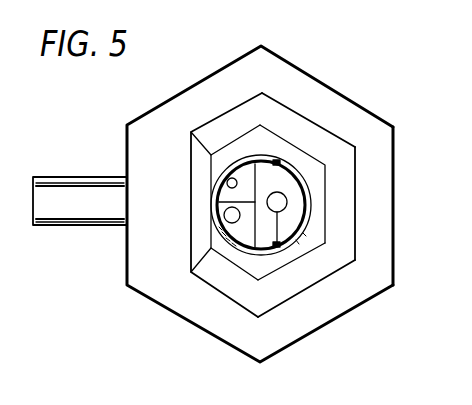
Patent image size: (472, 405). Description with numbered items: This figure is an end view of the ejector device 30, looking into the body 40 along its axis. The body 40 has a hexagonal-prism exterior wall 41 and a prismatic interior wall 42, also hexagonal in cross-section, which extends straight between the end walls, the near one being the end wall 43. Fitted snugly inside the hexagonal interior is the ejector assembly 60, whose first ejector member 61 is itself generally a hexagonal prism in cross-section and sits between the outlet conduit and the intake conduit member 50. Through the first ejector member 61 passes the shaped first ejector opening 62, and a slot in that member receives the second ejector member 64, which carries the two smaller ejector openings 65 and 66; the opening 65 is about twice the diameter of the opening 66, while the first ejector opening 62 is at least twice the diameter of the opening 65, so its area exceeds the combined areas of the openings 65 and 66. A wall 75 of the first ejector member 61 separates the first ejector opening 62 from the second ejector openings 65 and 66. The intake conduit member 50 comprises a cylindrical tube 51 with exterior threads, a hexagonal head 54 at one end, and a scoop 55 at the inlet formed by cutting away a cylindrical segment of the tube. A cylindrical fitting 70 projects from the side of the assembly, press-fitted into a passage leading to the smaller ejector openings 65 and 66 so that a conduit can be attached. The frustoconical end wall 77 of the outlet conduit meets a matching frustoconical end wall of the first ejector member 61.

The connector assembly 30 is at (348, 82).
The body 40 is at (350, 215).
The hexagonal-prism exterior wall 41 is at (334, 280).
The prismatic interior wall 42 is at (323, 226).
The end wall 43 is at (342, 188).
The intake conduit member 50 is at (303, 172).
The cylindrical tube 51 is at (258, 157).
The hexagonal head 54 is at (277, 247).
The scoop 55 is at (363, 153).
The ejector assembly 60 is at (209, 288).
The first ejector member 61 is at (277, 178).
The first ejector opening 62 is at (268, 262).
The second ejector member 64 is at (247, 173).
The ejector opening 65 is at (226, 216).
The ejector opening 66 is at (228, 183).
The cylindrical fitting 70 is at (70, 189).
The wall 75 is at (220, 201).
The frustoconical end wall 77 is at (380, 262).